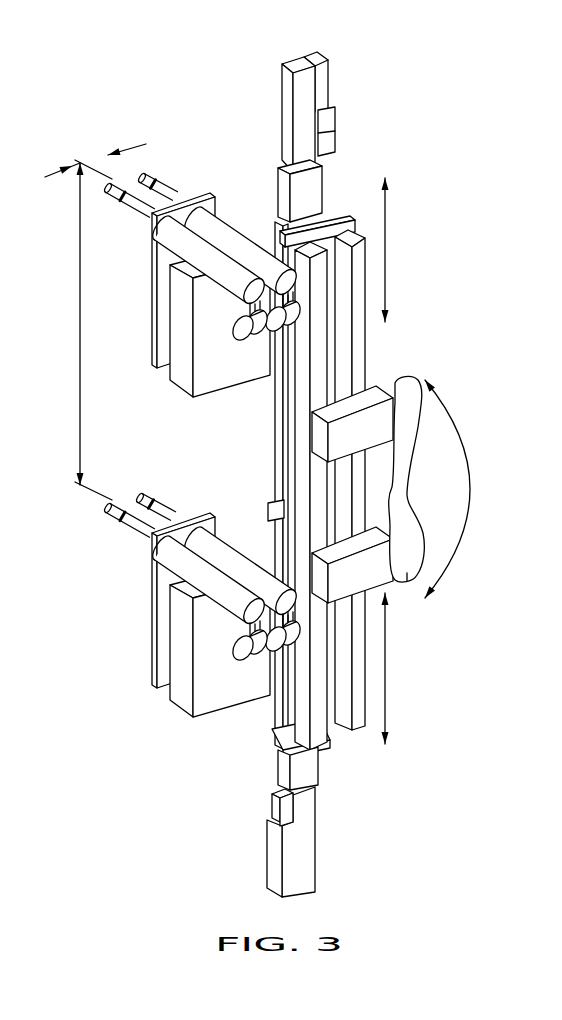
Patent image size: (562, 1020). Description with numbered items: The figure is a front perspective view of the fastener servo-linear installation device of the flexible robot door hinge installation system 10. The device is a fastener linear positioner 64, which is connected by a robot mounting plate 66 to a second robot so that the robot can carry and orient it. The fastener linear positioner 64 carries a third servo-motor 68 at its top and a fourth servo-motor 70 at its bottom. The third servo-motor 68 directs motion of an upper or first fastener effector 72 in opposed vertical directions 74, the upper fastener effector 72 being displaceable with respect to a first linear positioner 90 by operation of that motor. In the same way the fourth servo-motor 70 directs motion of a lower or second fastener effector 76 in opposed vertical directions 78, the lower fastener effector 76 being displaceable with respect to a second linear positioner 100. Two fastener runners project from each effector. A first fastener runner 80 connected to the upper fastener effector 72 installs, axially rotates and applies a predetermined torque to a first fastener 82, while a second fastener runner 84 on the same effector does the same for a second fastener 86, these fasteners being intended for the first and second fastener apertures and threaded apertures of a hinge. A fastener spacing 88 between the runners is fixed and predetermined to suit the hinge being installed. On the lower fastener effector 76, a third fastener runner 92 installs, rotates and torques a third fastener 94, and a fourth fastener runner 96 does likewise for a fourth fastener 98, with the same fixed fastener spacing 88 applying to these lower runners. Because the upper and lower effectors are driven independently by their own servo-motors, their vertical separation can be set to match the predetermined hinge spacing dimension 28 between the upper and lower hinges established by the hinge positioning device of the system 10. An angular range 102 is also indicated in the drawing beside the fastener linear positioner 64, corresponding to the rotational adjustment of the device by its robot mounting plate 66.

The flexible robot door hinge installation system 10 is at (388, 120).
The hinge spacing dimension 28 is at (78, 330).
The fastener linear positioner 64 is at (363, 362).
The robot mounting plate 66 is at (420, 597).
The third servo-motor 68 is at (320, 93).
The fourth servo-motor 70 is at (308, 838).
The upper fastener effector 72 is at (215, 385).
The opposed vertical directions 74 is at (385, 217).
The lower fastener effector 76 is at (215, 700).
The opposed vertical directions 78 is at (385, 705).
The first fastener runner 80 is at (170, 240).
The first fastener 82 is at (108, 197).
The second fastener runner 84 is at (225, 210).
The second fastener 86 is at (150, 180).
The fastener spacing 88 is at (140, 144).
The first linear positioner 90 is at (283, 425).
The third fastener runner 92 is at (167, 557).
The third fastener 94 is at (104, 518).
The fourth fastener runner 96 is at (210, 530).
The fourth fastener 98 is at (148, 490).
The second linear positioner 100 is at (270, 517).
The rotation angle θ2 102 is at (457, 420).